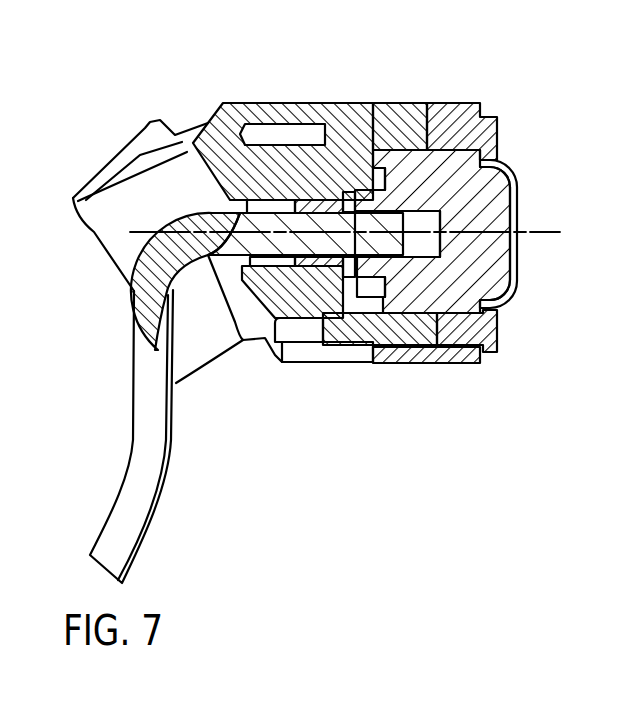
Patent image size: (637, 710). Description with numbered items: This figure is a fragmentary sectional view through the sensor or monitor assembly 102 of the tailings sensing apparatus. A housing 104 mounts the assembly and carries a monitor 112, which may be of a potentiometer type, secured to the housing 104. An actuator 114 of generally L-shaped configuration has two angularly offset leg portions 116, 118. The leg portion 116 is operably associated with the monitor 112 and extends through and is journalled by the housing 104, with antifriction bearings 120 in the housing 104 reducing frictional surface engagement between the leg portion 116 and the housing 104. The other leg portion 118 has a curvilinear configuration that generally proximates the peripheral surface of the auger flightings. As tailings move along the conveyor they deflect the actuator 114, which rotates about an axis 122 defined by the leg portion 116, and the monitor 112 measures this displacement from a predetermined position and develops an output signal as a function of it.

The sensor or monitor assembly 102 is at (400, 100).
The housing 104 is at (107, 227).
The monitor 112 is at (507, 267).
The actuator 114 is at (128, 545).
The leg portion 116 is at (217, 213).
The leg portion 118 is at (137, 387).
The antifriction bearings 120 is at (290, 278).
The axis 122 is at (540, 231).